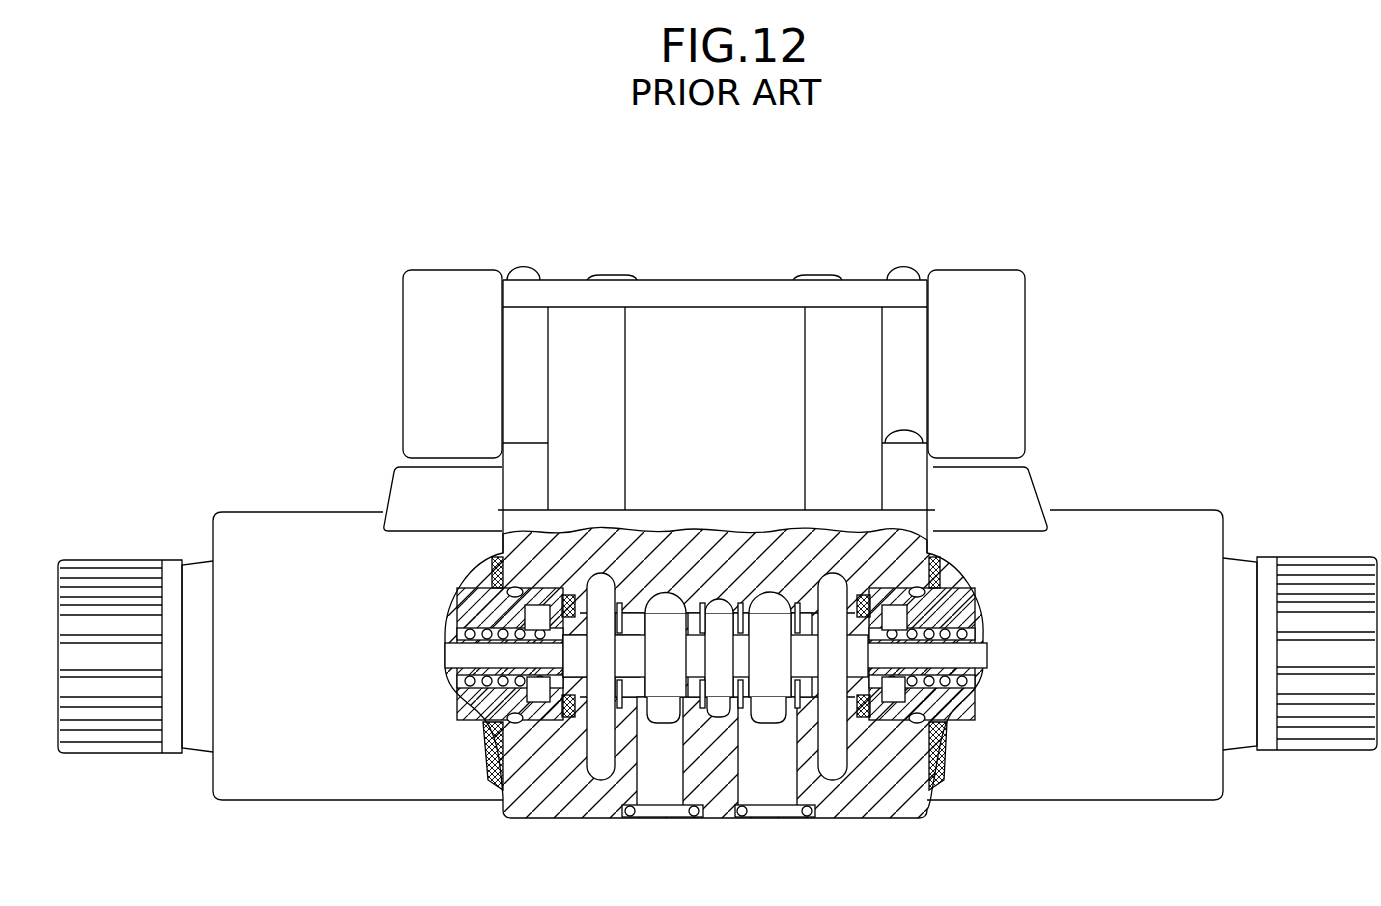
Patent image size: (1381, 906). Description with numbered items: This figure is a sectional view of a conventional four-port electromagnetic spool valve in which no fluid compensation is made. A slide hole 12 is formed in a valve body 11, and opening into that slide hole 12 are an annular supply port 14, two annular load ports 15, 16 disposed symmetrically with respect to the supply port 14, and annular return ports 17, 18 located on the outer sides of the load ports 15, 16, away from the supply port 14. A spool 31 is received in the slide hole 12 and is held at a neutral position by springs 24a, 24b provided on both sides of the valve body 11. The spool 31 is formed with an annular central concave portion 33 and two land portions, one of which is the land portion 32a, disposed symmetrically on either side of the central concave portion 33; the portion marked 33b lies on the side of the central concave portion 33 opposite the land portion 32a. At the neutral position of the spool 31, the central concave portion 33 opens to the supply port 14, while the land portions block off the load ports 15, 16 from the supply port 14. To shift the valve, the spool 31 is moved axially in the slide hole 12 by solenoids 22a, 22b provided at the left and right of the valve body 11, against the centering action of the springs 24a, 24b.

The valve body 11 is at (915, 800).
The slide hole 12 is at (673, 690).
The supply port 14 is at (717, 707).
The load port 15 is at (643, 713).
The load port 16 is at (770, 710).
The return port 17 is at (602, 755).
The return port 18 is at (828, 763).
The solenoid 22a is at (240, 532).
The solenoid 22b is at (1193, 527).
The spring 24a is at (460, 687).
The spring 24b is at (967, 627).
The spool 31 is at (593, 643).
The land portion 32a is at (665, 595).
The central concave portion 33 is at (717, 612).
The right valve seat 33b is at (777, 595).